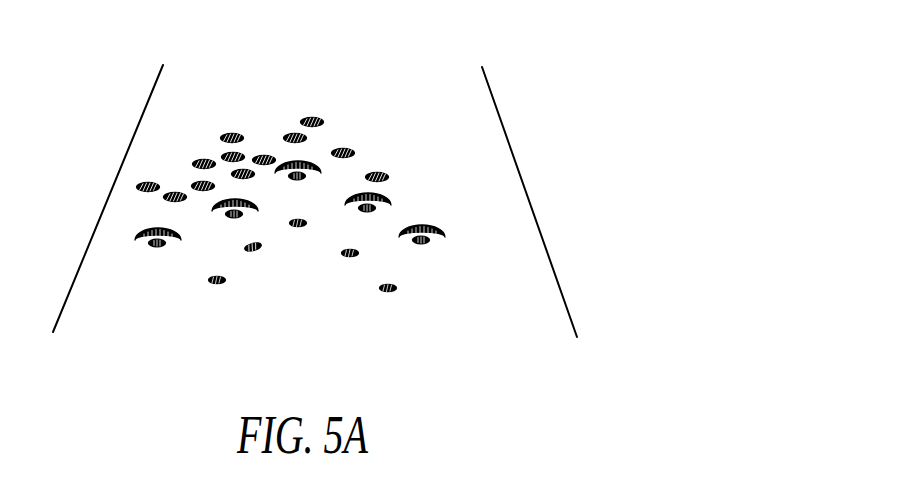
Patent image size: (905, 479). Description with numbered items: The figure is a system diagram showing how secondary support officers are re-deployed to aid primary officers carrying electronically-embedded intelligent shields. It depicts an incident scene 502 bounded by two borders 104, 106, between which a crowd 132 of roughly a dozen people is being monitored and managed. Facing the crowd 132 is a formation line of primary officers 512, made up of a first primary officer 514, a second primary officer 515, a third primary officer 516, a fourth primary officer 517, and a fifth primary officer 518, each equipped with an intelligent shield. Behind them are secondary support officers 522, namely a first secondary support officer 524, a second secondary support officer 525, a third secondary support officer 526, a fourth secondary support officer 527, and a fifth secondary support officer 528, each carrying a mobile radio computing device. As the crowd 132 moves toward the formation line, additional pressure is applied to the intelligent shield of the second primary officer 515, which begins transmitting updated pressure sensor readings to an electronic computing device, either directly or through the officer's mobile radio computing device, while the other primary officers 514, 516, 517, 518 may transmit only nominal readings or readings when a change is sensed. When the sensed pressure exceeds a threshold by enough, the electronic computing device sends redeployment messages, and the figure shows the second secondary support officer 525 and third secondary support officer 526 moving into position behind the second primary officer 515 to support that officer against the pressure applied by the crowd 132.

The incident scene 502 is at (474, 38).
The border 104 is at (105, 207).
The border 106 is at (526, 190).
The crowd 132 is at (271, 119).
The formation line of primary officers 512 is at (140, 259).
The first primary officer 514 is at (181, 235).
The second primary officer 515 is at (258, 206).
The third primary officer 516 is at (310, 176).
The fourth primary officer 517 is at (389, 200).
The fifth primary officer 518 is at (424, 228).
The secondary support officers 522 is at (201, 297).
The first secondary support officer 524 is at (218, 285).
The second secondary support officer 525 is at (234, 229).
The third secondary support officer 526 is at (252, 229).
The fourth secondary support officer 527 is at (347, 258).
The fifth secondary support officer 528 is at (387, 293).